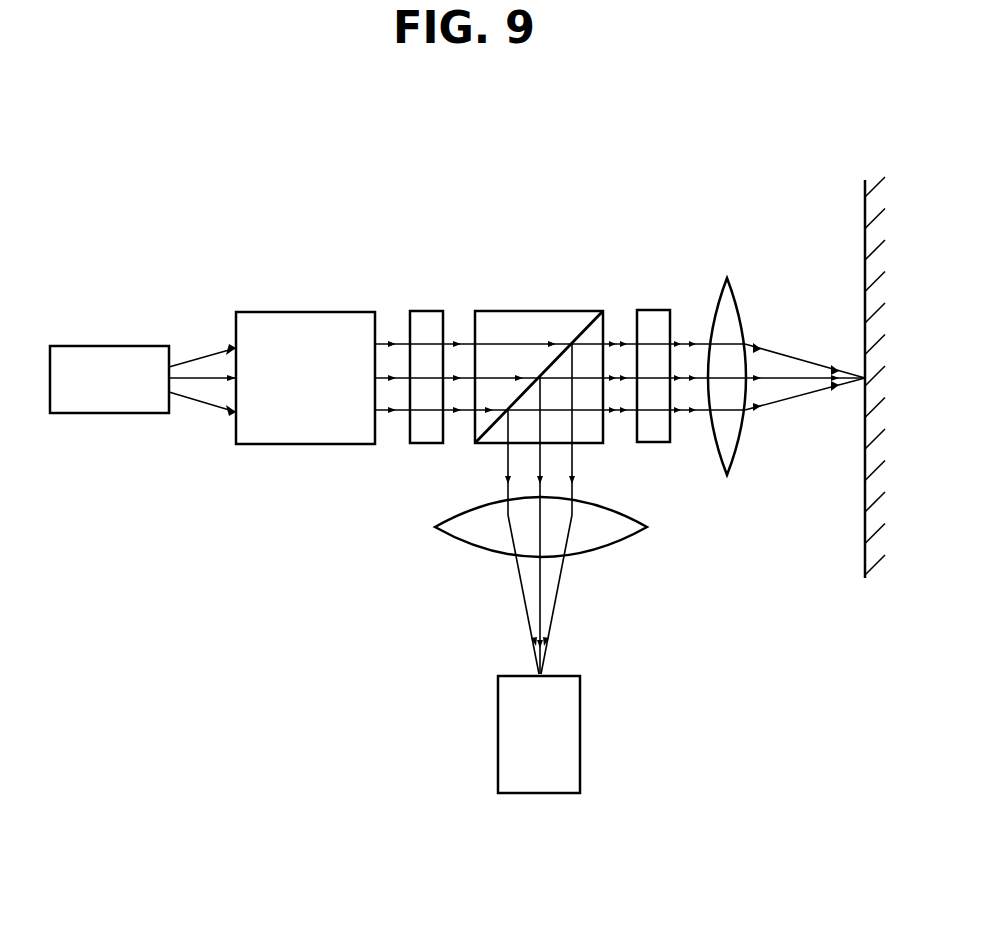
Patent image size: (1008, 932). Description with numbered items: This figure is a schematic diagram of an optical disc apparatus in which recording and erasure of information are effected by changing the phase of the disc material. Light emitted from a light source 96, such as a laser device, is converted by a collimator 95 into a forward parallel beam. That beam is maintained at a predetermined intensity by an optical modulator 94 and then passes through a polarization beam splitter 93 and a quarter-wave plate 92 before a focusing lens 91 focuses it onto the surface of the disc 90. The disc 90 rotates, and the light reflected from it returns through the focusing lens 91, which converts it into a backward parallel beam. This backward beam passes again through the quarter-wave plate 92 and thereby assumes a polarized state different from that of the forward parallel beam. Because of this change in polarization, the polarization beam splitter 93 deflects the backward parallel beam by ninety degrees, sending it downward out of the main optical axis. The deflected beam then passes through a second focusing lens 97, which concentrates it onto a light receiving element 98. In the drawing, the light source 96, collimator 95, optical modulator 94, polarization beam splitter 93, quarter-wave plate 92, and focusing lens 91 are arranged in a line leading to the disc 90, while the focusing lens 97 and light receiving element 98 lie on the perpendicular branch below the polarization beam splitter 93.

The disc 90 is at (865, 540).
The focusing lens 91 is at (735, 303).
The λ/4 plate 92 is at (658, 310).
The polarization beam splitter 93 is at (555, 311).
The optical modulator 94 is at (430, 311).
The collimator 95 is at (322, 312).
The light source 96 is at (150, 346).
The focusing lens 97 is at (470, 548).
The light receiving element 98 is at (580, 745).